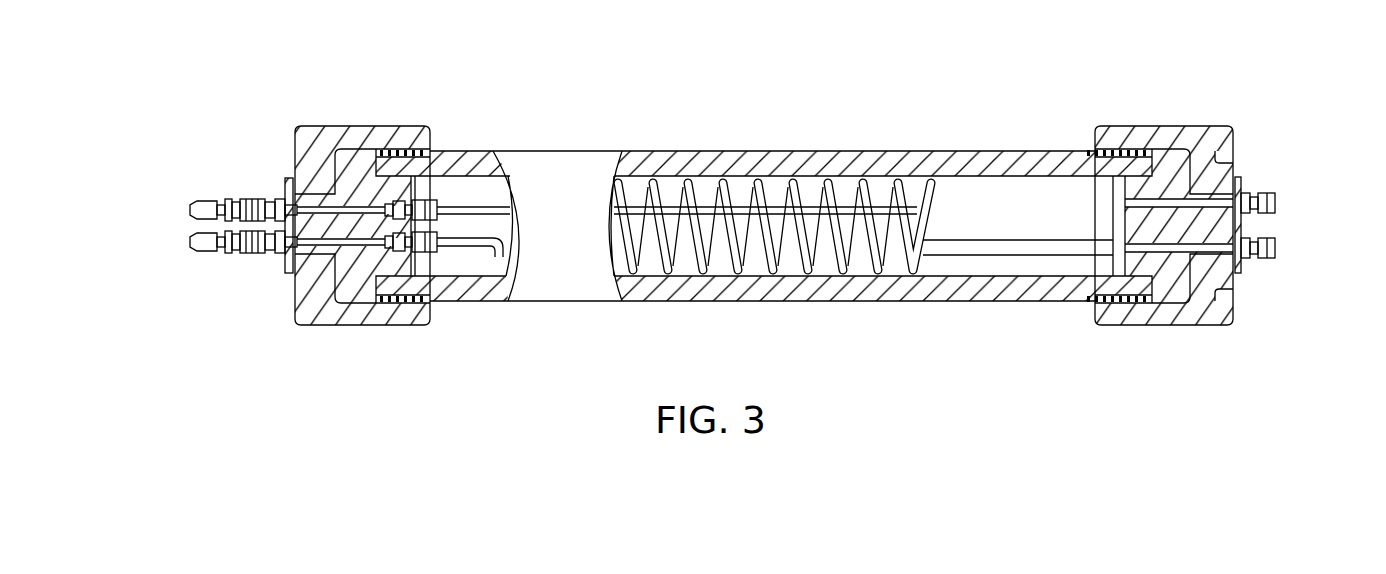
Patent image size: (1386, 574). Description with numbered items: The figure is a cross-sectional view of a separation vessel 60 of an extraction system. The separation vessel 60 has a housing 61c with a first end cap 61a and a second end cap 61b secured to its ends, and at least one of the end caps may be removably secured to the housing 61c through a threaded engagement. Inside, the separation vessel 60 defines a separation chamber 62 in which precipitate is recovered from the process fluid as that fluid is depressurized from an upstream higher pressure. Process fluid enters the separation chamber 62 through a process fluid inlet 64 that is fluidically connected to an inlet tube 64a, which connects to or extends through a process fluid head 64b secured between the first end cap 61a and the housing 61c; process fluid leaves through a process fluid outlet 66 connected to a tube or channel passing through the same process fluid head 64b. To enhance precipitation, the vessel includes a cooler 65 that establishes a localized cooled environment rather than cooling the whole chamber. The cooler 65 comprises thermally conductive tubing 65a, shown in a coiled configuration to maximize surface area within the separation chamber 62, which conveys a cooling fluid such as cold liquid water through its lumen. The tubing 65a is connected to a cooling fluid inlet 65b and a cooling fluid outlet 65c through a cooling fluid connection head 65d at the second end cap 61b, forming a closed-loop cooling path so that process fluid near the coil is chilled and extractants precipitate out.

The separation vessel 60 is at (731, 208).
The first end cap 61a is at (1185, 135).
The second end cap 61b is at (347, 136).
The housing 61c is at (733, 152).
The separation chamber 62 is at (980, 263).
The process fluid inlet 64 is at (1275, 248).
The inlet tube 64a is at (1017, 245).
The process fluid head 64b is at (1143, 223).
The cooler 65 is at (492, 254).
The tubing 65a is at (647, 163).
The cooling fluid inlet 65b is at (190, 242).
The cooling fluid outlet 65c is at (190, 210).
The cooling fluid connection head 65d is at (345, 253).
The process fluid outlet 66 is at (1275, 205).